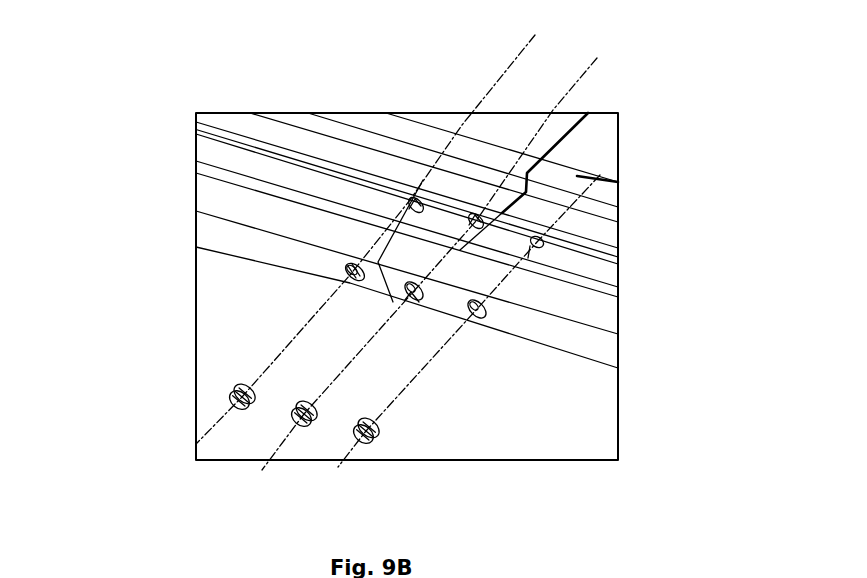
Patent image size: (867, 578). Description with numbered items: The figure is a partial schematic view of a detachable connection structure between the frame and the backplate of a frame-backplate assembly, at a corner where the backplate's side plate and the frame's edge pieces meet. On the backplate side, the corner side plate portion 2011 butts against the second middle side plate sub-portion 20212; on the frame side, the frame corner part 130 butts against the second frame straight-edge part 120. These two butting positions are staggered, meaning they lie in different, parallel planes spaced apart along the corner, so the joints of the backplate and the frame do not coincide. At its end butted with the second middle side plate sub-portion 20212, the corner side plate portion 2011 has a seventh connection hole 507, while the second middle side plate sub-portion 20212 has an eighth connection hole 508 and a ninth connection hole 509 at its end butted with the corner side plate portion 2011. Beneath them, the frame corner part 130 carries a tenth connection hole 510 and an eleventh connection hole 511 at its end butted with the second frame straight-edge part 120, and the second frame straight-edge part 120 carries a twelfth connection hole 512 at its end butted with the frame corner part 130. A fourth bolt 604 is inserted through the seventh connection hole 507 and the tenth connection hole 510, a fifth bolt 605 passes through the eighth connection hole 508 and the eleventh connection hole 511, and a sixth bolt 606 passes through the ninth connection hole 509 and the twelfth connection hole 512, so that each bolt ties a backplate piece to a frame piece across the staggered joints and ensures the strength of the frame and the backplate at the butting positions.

The second middle side plate sub-portion 20212 is at (303, 161).
The second frame straight-edge part 120 is at (228, 210).
The frame corner part 130 is at (575, 311).
The corner side plate portion 2011 is at (577, 175).
The ninth connection hole 509 is at (418, 199).
The eighth connection hole 508 is at (484, 220).
The seventh connection hole 507 is at (545, 241).
The twelfth connection hole 512 is at (345, 272).
The eleventh connection hole 511 is at (419, 300).
The tenth connection hole 510 is at (490, 305).
The sixth bolt 606 is at (230, 395).
The fifth bolt 605 is at (296, 422).
The fourth bolt 604 is at (362, 440).